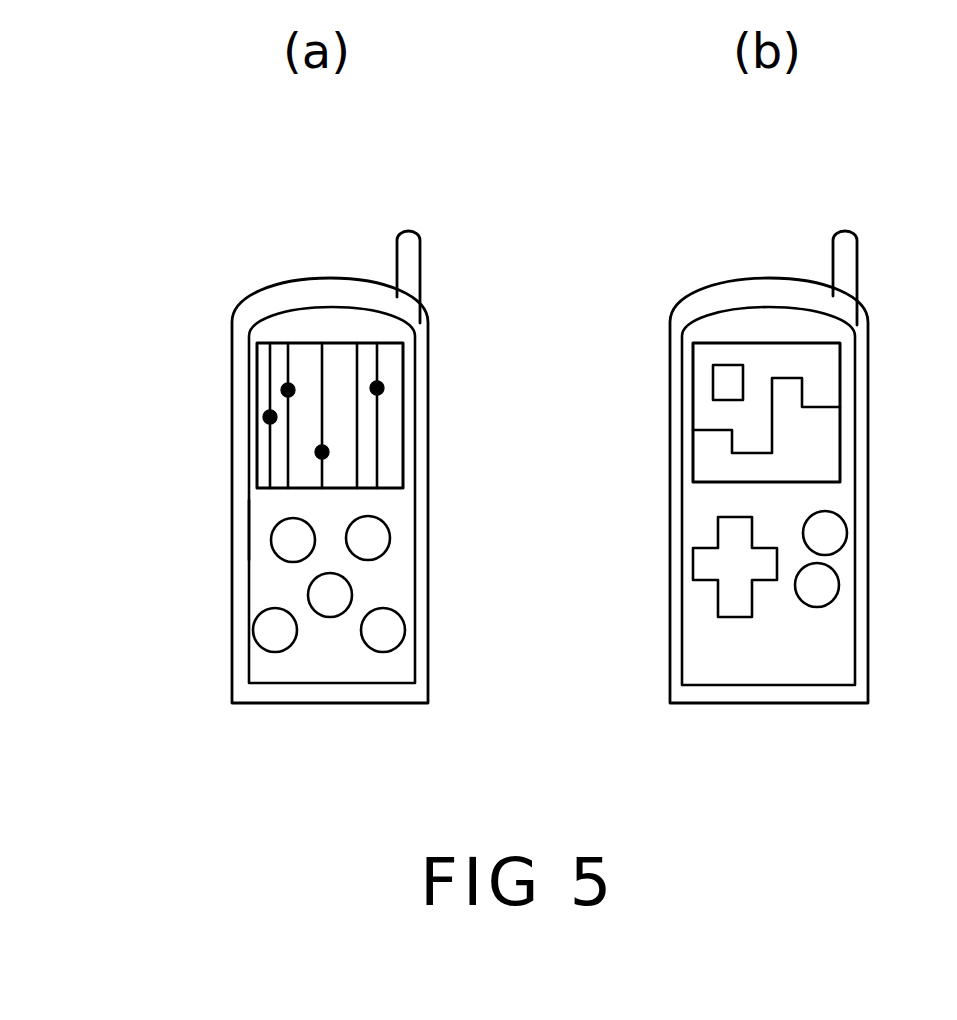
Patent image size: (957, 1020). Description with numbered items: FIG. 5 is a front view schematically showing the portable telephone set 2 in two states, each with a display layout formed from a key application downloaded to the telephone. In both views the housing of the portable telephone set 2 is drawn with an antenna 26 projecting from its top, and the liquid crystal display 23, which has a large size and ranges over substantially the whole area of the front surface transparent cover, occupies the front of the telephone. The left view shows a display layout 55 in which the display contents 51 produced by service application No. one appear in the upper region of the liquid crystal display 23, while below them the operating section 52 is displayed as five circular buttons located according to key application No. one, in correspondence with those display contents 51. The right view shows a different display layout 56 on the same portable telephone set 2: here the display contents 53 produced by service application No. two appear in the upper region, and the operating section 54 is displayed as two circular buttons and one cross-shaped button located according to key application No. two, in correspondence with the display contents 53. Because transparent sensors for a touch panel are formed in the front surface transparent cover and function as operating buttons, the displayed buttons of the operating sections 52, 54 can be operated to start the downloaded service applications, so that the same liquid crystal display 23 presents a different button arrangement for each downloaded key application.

The portable telephone set 2 is at (442, 466).
The antenna 26 is at (413, 230).
The display layout 55 is at (287, 297).
The display contents 51 is at (285, 370).
The liquid crystal display 23 is at (243, 535).
The operating section 52 is at (395, 628).
The display layout 56 is at (720, 297).
The display contents 53 is at (825, 370).
The operating section 54 is at (832, 583).